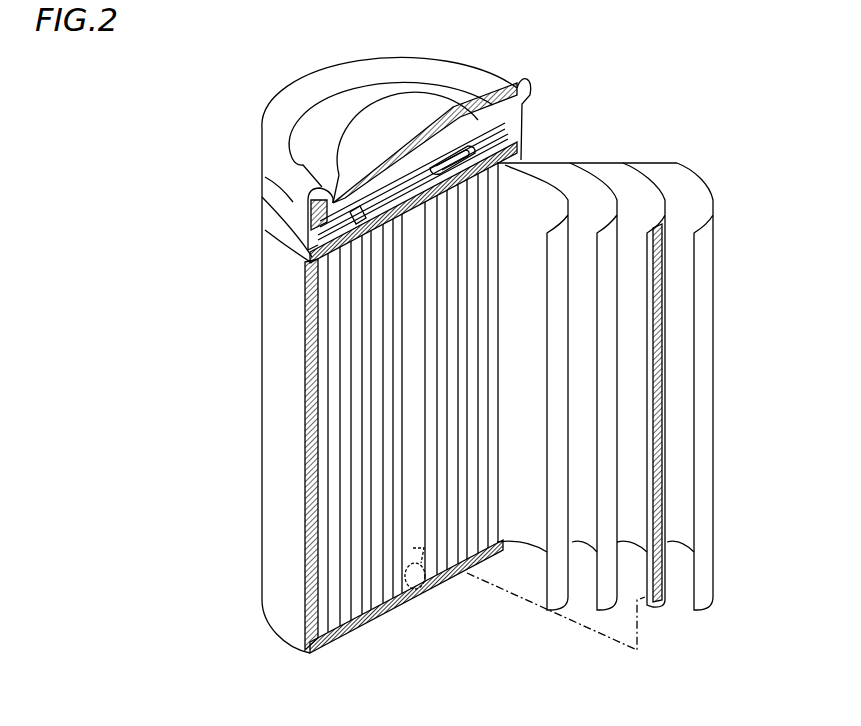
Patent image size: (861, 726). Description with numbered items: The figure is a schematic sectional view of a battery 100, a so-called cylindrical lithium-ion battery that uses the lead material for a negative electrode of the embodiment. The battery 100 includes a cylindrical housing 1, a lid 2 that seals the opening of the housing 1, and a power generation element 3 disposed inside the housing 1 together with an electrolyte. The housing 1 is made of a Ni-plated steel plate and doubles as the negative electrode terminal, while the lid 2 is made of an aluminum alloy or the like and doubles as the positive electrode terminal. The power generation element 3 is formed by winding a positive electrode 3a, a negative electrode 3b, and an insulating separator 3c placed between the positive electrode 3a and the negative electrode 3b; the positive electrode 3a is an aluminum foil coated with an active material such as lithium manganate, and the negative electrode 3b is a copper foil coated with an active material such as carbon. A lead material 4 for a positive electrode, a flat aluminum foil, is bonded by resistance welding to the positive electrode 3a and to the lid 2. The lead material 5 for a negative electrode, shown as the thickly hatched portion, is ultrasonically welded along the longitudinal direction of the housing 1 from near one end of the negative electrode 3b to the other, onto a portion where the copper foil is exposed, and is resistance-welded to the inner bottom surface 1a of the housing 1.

The battery 100 is at (735, 91).
The housing 1 is at (281, 400).
The inner bottom surface 1a is at (395, 583).
The lid 2 is at (341, 112).
The power generation element 3 is at (763, 317).
The positive electrode 3a is at (557, 335).
The negative electrode 3b is at (667, 402).
The insulating separator 3c is at (703, 247).
The lead material for a positive electrode 4 is at (403, 193).
The lead material for a negative electrode 5 is at (662, 513).